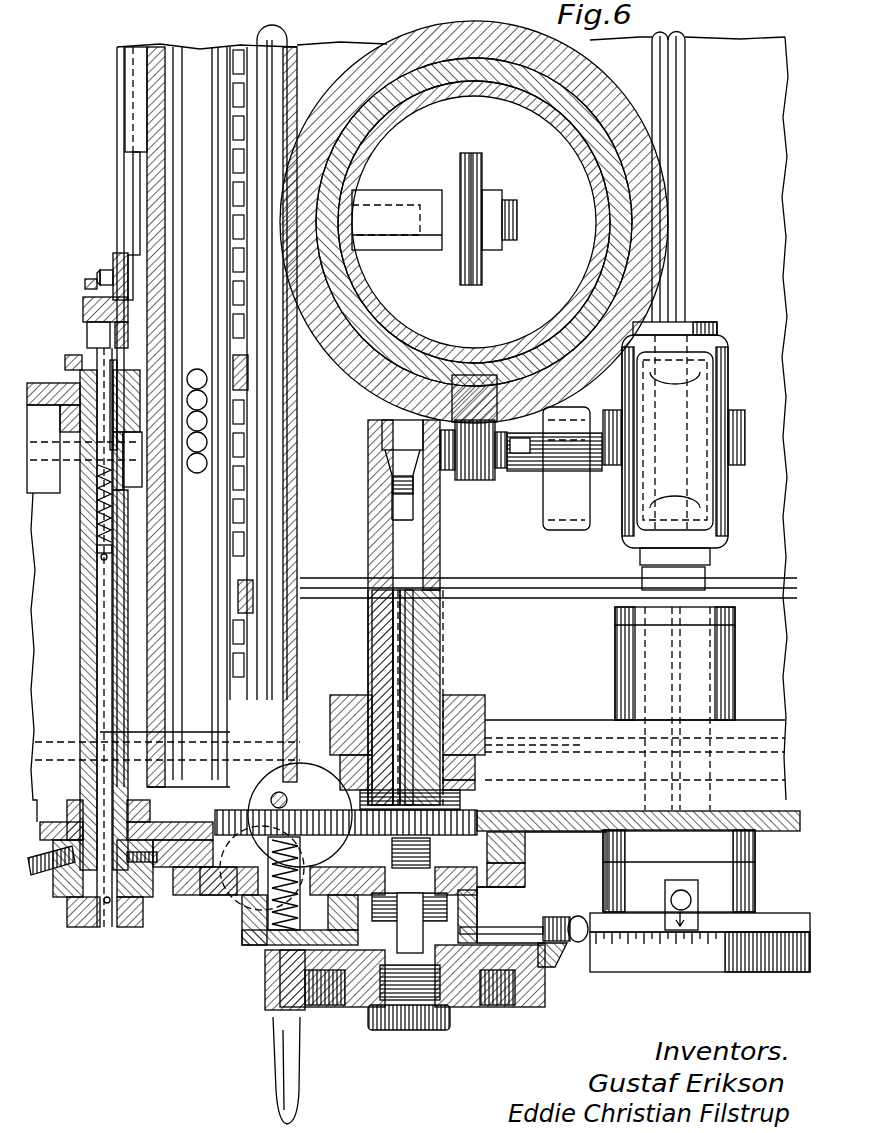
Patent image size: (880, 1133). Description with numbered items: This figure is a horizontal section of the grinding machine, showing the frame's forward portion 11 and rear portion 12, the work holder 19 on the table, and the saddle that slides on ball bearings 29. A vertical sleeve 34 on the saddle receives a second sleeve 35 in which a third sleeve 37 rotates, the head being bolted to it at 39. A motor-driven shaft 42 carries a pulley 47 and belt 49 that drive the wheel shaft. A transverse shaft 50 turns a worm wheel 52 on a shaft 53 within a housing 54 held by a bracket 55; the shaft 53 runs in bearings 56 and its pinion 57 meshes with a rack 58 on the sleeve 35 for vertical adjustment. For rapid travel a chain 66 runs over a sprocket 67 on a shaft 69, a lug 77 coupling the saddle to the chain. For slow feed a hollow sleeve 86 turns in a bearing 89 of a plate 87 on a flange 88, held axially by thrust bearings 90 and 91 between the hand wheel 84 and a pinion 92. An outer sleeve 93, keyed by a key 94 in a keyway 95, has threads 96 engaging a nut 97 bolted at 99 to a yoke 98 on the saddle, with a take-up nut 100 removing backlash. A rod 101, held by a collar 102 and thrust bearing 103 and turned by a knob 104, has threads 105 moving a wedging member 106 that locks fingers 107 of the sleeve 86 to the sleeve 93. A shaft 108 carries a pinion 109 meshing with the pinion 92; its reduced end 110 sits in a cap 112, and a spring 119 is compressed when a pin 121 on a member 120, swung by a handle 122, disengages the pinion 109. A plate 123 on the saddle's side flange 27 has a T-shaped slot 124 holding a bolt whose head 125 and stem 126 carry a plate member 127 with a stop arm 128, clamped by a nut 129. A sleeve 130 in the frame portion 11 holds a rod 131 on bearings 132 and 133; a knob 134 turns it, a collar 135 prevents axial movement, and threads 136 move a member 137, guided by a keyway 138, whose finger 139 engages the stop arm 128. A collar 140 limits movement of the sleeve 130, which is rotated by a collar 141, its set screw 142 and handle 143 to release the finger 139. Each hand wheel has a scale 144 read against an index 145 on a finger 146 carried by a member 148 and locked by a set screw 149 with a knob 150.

The side flange 27 is at (147, 126).
The plate 123 is at (147, 184).
The T-shaped slot 124 is at (133, 208).
The plate member 127 is at (113, 257).
The stem portion 126 is at (100, 278).
The nut 129 is at (85, 284).
The bolt head 125 is at (133, 278).
The stop arm 128 is at (83, 309).
The finger 139 is at (87, 336).
The collar 140 is at (65, 363).
The forward frame portion 11 is at (562, 722).
The keyway 138 is at (85, 455).
The rod 131 is at (97, 671).
The hollow sleeve member 130 is at (80, 709).
The bearing 133 is at (95, 578).
The member 137 is at (97, 505).
The screw-threaded portion 136 is at (97, 529).
The collar 135 is at (100, 558).
The work holder 19 is at (58, 822).
The bearing 132 is at (148, 820).
The operating handle 143 is at (38, 876).
The collar 141 is at (80, 927).
The operating knob 134 is at (128, 927).
The set screw 142 is at (152, 897).
The ball bearings 29 is at (197, 369).
The sprocket 67 is at (256, 590).
The lug 77 is at (288, 383).
The chain 66 is at (290, 412).
The cylindrical sleeve 34 is at (603, 104).
The second cylindrical sleeve 35 is at (560, 128).
The third cylindrical sleeve 37 is at (392, 112).
The shaft 42 is at (425, 248).
The belt 49 is at (472, 286).
The pulley 47 is at (488, 262).
The rack 58 is at (480, 395).
The transverse shaft 50 is at (687, 271).
The housing 54 is at (729, 378).
The worm wheel 52 is at (720, 525).
The shaft 69 is at (565, 592).
The pinion 57 is at (478, 482).
The bearings 56 is at (448, 471).
The shaft 53 is at (592, 456).
The bracket 55 is at (570, 526).
The collar 102 is at (395, 507).
The wedging member 106 is at (385, 437).
The resilient fingers 107 is at (390, 464).
The screw-threaded portion 105 is at (393, 487).
The inner sleeve 86 is at (387, 665).
The shaft 108 is at (380, 649).
The rod 101 is at (400, 618).
The outer sleeve 93 is at (442, 621).
The keyway 95 is at (437, 653).
The screw-threaded portion 96 is at (443, 673).
The circular member 120 is at (322, 760).
The yoke-like member 98 is at (486, 719).
The nut 97 is at (478, 771).
The key 94 is at (478, 787).
The bolts 99 is at (532, 745).
The take-up nut 100 is at (462, 801).
The reduced end 110 is at (295, 840).
The pinion 109 is at (249, 808).
The pin 121 is at (288, 801).
The pinion 92 is at (478, 821).
The thrust bearing 91 is at (432, 849).
The flange 88 is at (526, 849).
The plate 87 is at (526, 874).
The bearing 89 is at (501, 897).
The thrust bearing 90 is at (511, 924).
The member 148 is at (548, 925).
The operating knob 150 is at (578, 916).
The hand wheel 84 is at (530, 1007).
The thrust bearing 103 is at (440, 986).
The operating knob 104 is at (392, 1032).
The set screws 149 is at (345, 1006).
The cap 112 is at (256, 946).
The spring 119 is at (248, 935).
The handle 122 is at (222, 906).
The rear frame portion 12 is at (605, 836).
The index marker 145 is at (700, 921).
The adjustable finger 146 is at (700, 906).
The scale 144 is at (640, 962).
The bolts 39 is at (749, 973).